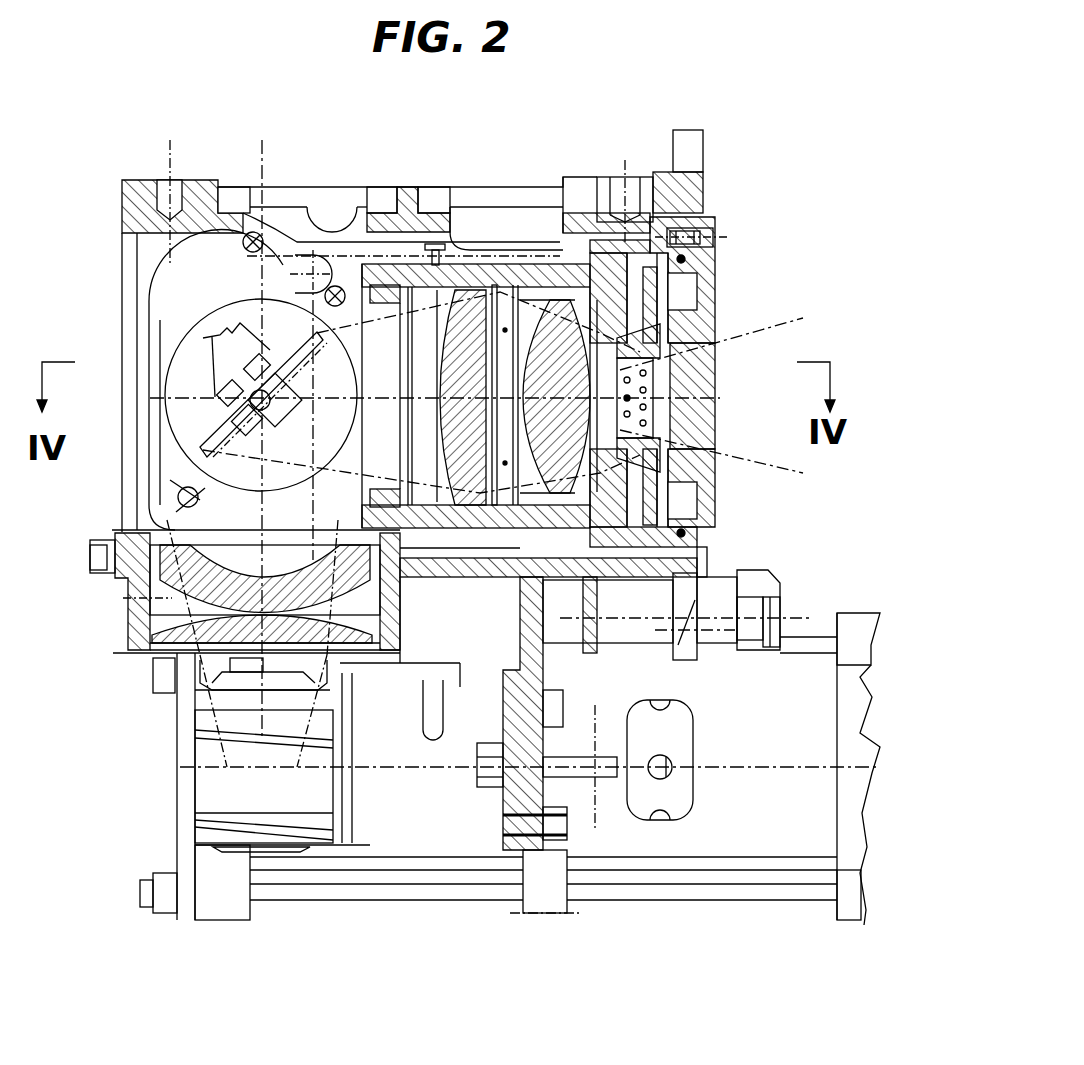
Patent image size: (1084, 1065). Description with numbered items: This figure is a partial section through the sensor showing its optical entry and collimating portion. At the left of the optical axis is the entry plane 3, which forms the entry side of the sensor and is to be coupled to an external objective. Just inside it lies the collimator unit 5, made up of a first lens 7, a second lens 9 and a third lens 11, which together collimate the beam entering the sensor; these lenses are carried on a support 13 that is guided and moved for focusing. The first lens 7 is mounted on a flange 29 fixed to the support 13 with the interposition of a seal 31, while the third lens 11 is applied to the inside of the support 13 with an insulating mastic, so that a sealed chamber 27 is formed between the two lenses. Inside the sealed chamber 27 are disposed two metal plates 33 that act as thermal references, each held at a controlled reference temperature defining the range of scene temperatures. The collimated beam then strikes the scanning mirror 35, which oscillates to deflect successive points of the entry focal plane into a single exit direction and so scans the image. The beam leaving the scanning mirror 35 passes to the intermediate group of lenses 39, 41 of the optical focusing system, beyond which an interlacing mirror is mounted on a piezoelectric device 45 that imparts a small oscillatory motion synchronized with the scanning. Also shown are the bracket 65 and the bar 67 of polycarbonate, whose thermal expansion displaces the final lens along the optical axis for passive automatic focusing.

The entry plane 3 is at (710, 185).
The collimator unit 5 is at (552, 256).
The first lens 7 is at (703, 384).
The second lens 9 is at (565, 383).
The third lens 11 is at (457, 410).
The support 13 is at (525, 283).
The sealed chamber 27 is at (660, 410).
The flange 29 is at (717, 286).
The seal 31 is at (686, 259).
The metal plates 33 is at (717, 353).
The scanning mirror 35 is at (305, 352).
The lens of intermediate group 39 is at (280, 530).
The lens of intermediate group 41 is at (347, 630).
The piezoelectric device 45 is at (280, 803).
The bracket 65 is at (770, 617).
The bar 67 is at (720, 590).